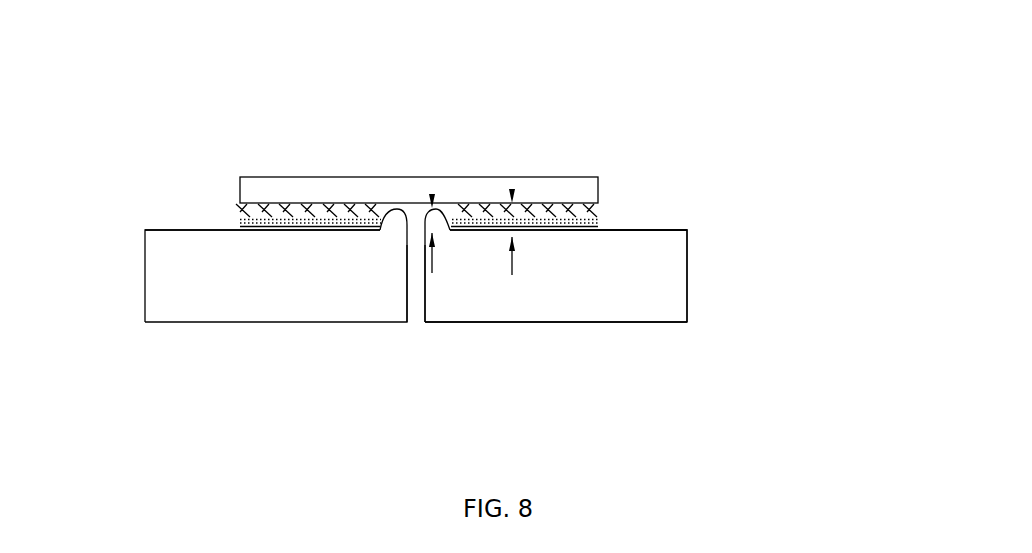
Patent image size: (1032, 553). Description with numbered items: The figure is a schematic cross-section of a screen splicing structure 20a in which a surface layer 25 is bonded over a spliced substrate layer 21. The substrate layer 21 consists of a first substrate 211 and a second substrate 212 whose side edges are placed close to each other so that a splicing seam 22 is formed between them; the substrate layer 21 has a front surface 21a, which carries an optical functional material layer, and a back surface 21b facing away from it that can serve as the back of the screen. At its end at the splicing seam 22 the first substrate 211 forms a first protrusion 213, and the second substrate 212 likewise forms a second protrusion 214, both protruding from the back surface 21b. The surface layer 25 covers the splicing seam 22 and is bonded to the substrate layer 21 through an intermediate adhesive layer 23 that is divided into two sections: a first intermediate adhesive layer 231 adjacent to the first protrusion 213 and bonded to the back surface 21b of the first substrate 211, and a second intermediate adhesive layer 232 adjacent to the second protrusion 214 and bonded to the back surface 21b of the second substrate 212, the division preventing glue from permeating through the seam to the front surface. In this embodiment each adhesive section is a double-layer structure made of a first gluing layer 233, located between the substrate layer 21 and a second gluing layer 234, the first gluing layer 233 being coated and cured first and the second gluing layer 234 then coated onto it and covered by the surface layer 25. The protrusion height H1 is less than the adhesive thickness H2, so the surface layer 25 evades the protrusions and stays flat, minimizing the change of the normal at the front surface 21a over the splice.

The screen splicing structure 20a is at (458, 55).
The substrate layer 21 is at (763, 268).
The front surface 21a is at (618, 322).
The back surface 21b is at (652, 230).
The first substrate 211 is at (518, 302).
The second substrate 212 is at (265, 300).
The first protrusion 213 is at (440, 232).
The second protrusion 214 is at (400, 228).
The splicing seam 22 is at (420, 293).
The intermediate adhesive layer 23 is at (103, 123).
The first intermediate adhesive layer 231 is at (605, 242).
The second intermediate adhesive layer 232 is at (228, 233).
The first gluing layer 233 is at (238, 225).
The second gluing layer 234 is at (242, 212).
The surface layer 25 is at (580, 188).
The height of the protrusions H1 is at (432, 208).
The thickness of the intermediate adhesive layers H2 is at (512, 203).